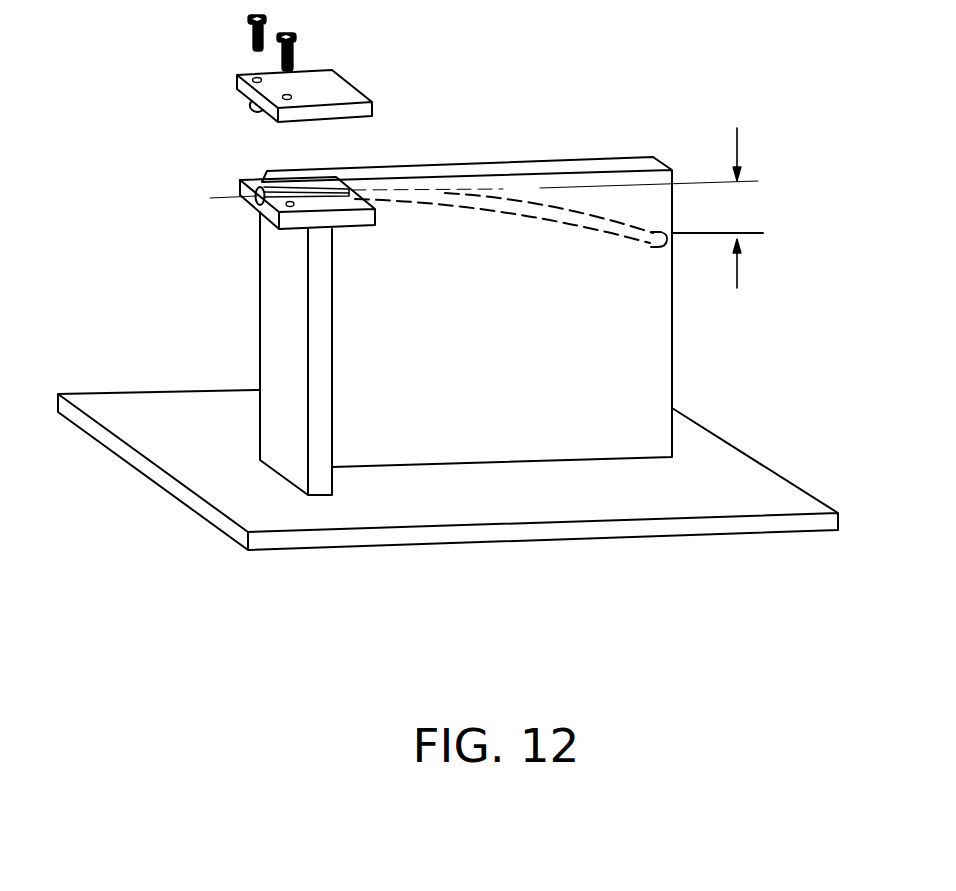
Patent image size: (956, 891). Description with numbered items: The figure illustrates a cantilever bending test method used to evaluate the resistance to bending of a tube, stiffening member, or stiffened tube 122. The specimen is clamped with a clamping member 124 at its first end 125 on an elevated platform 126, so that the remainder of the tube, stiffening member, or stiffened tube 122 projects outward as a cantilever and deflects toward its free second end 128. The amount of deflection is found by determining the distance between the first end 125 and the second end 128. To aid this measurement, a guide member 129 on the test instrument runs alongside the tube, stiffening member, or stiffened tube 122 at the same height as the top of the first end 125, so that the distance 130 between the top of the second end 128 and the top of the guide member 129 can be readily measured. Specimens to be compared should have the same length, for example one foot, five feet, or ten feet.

The tube, stiffening member, or stiffened tube 122 is at (580, 212).
The clamping member 124 is at (343, 90).
The first end 125 is at (252, 187).
The elevated platform 126 is at (301, 225).
The second end 128 is at (647, 240).
The guide member 129 is at (469, 170).
The distance 130 is at (717, 208).